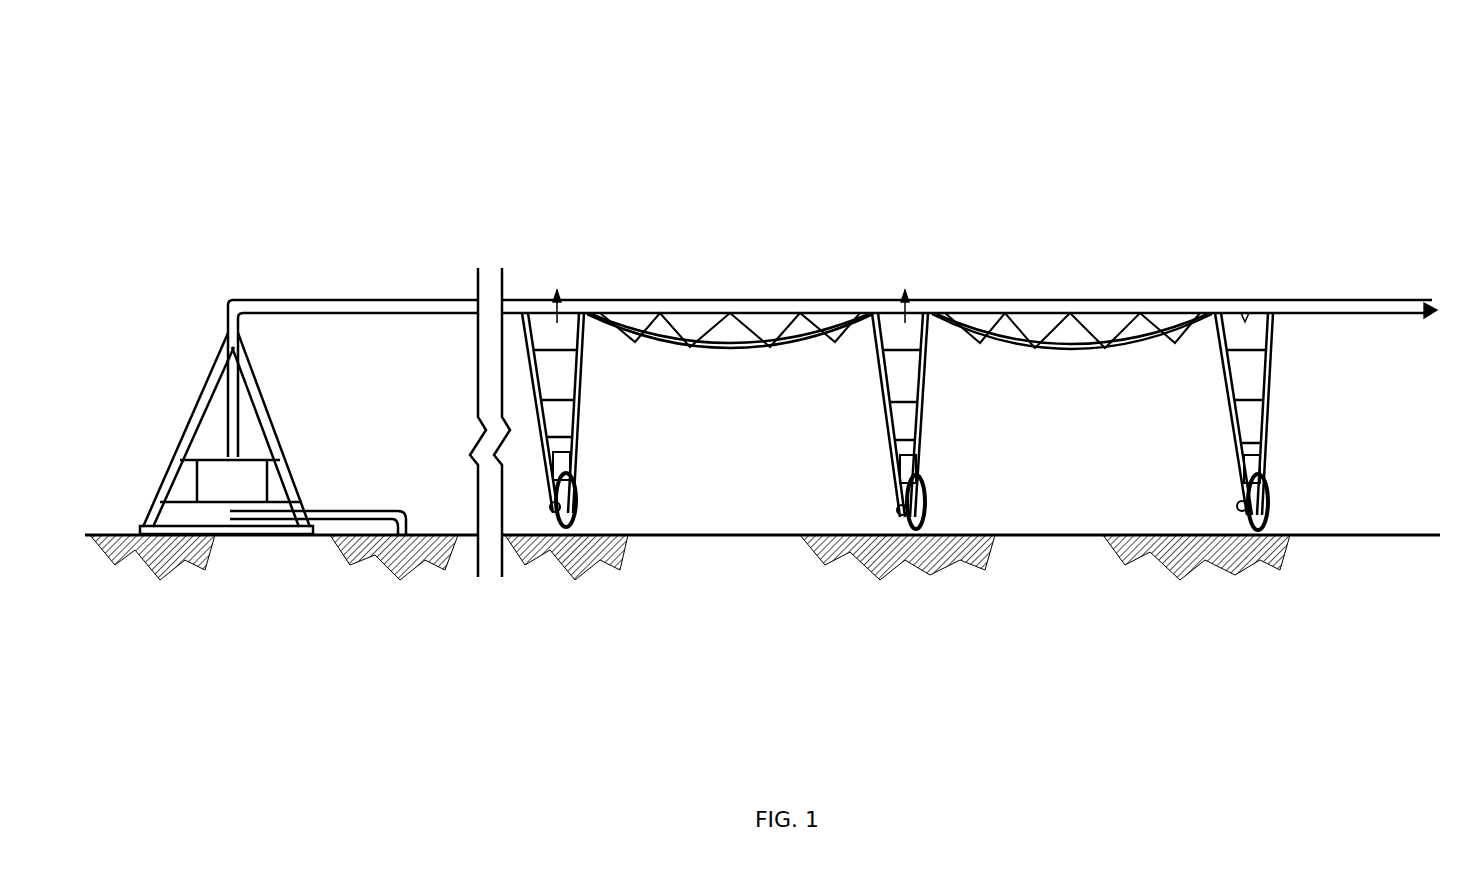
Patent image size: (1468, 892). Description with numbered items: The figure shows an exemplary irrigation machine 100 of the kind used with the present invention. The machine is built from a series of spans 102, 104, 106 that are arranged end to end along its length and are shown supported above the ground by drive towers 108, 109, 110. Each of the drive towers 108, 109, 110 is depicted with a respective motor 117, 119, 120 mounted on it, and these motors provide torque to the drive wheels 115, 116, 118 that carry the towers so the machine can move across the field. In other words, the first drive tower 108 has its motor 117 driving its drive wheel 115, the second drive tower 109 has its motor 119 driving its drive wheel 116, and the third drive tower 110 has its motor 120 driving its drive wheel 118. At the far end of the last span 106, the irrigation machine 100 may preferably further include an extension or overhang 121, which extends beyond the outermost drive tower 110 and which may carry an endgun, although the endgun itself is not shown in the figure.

The irrigation machine 100 is at (845, 112).
The span 102 is at (295, 298).
The span 104 is at (695, 298).
The span 106 is at (1052, 299).
The drive tower 108 is at (580, 383).
The drive tower 109 is at (925, 390).
The drive tower 110 is at (1265, 400).
The drive wheel 115 is at (572, 507).
The drive wheel 116 is at (927, 503).
The motor 117 is at (572, 443).
The drive wheel 118 is at (1265, 507).
The motor 119 is at (923, 447).
The motor 120 is at (1263, 447).
The extension/overhang 121 is at (1428, 304).